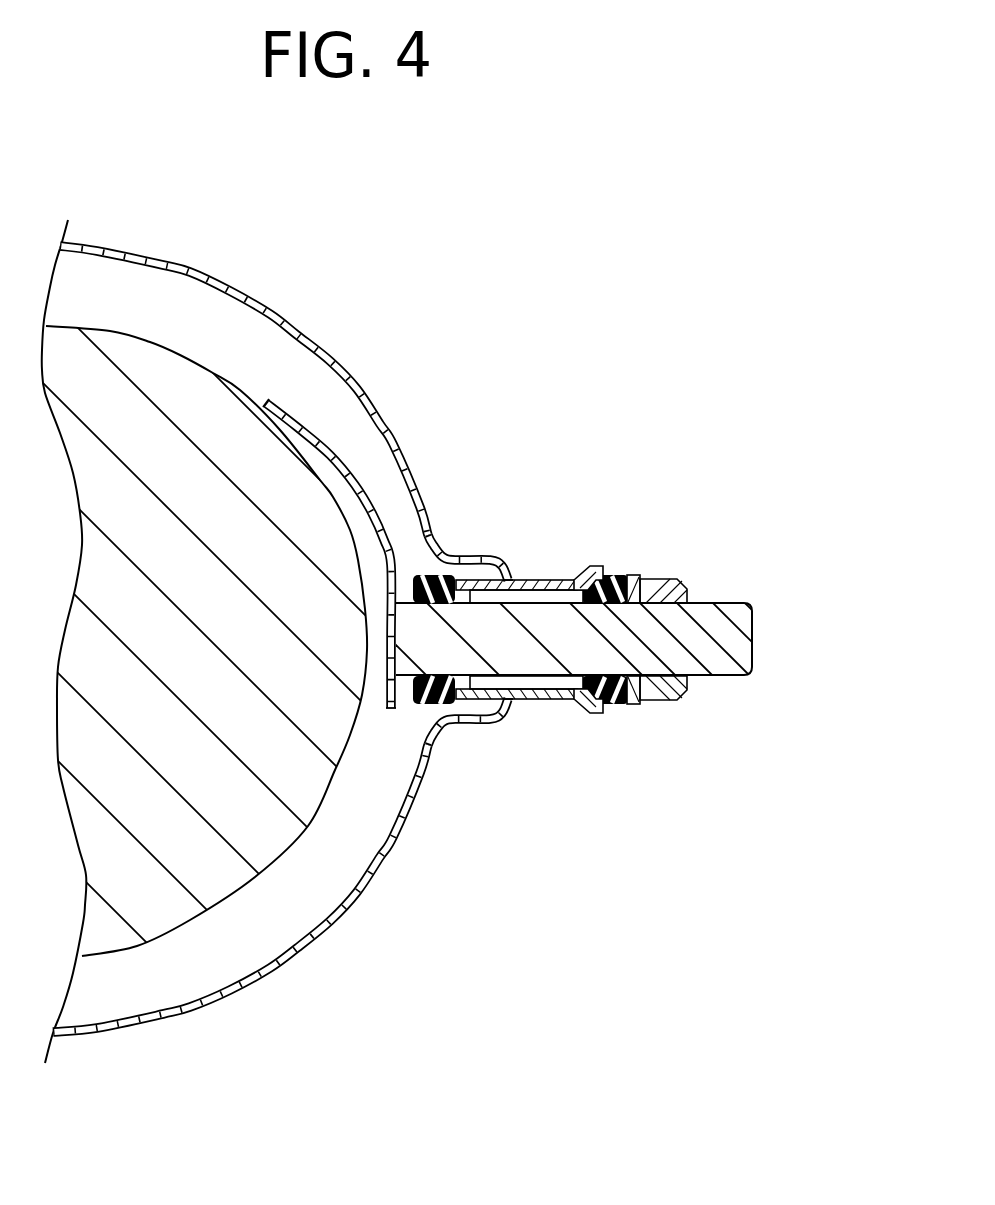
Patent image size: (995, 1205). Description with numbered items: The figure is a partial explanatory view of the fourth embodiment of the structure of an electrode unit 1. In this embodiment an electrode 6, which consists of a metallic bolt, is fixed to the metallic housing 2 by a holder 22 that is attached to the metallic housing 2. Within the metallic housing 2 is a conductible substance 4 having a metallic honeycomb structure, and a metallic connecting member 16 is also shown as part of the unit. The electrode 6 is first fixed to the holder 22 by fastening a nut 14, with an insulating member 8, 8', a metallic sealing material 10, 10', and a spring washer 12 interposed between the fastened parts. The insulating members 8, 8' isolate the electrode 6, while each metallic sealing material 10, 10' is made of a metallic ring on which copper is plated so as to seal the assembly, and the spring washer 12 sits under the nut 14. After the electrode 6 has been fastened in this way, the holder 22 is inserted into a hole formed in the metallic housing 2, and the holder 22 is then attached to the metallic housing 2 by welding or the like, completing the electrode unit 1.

The electrode unit 1 is at (780, 566).
The metallic housing 2 is at (393, 847).
The conductible substance 4 is at (267, 840).
The electrode 6 is at (710, 613).
The insulating member 8 is at (470, 680).
The insulating member 8' is at (607, 695).
The metallic sealing material 10 is at (434, 564).
The metallic sealing material 10' is at (543, 585).
The spring washer 12 is at (628, 575).
The nut 14 is at (667, 690).
The metallic connecting member 16 is at (355, 478).
The holder 22 is at (538, 700).